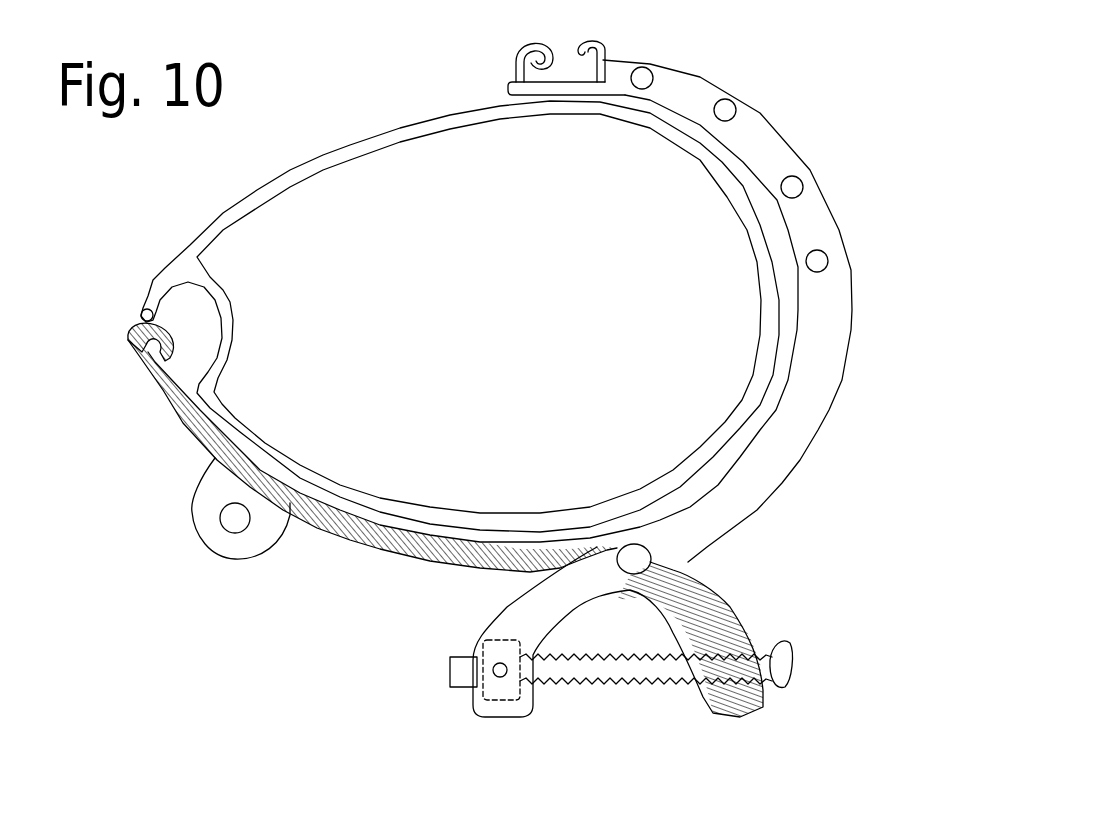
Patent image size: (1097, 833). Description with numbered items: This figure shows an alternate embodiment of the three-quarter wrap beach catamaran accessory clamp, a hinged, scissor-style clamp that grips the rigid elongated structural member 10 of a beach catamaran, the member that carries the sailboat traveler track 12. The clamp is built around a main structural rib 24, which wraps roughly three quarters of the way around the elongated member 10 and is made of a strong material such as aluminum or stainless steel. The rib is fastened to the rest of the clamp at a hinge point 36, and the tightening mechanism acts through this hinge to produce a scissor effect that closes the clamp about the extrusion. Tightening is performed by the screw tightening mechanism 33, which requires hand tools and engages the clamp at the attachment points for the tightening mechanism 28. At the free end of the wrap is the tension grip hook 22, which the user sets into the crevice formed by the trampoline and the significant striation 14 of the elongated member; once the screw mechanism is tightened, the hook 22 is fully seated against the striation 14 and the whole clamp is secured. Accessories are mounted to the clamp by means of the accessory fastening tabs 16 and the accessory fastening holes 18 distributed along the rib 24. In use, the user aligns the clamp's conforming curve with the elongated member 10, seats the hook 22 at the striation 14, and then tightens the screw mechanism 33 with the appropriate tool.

The beach catamaran rigid elongated structural member 10 is at (517, 113).
The sailboat traveler track 12 is at (526, 75).
The significant striation 14 is at (140, 311).
The accessory fastening tabs 16 is at (210, 505).
The accessory fastening holes 18 is at (726, 109).
The tension grip hook 22 is at (130, 345).
The main structural rib 24 is at (838, 310).
The attachment points for tightening mechanism 28 is at (498, 672).
The screw tightening mechanism 33 is at (625, 670).
The hinge point of two-piece solid clamp 36 is at (640, 558).